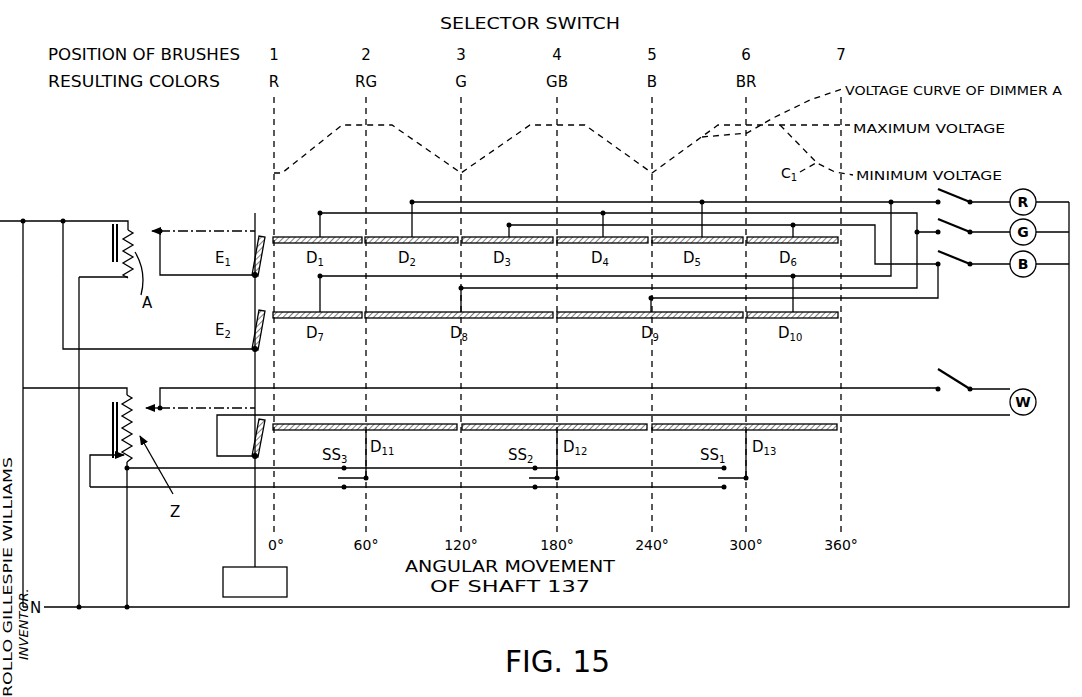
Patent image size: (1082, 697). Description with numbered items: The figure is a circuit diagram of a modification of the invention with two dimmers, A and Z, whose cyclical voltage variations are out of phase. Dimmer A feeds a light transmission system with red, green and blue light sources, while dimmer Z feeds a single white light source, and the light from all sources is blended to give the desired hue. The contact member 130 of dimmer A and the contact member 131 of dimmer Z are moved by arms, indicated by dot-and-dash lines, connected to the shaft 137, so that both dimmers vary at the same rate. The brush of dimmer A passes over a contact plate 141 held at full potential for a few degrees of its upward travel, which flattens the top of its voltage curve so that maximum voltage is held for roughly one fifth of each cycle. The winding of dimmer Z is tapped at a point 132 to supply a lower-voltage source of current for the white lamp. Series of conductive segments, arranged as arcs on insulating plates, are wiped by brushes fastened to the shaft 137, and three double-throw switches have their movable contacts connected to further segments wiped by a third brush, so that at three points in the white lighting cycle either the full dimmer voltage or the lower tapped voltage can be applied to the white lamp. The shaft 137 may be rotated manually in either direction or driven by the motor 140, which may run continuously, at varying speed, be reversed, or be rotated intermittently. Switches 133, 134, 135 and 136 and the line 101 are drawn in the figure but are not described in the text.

The neutral supply line N 101 is at (60, 605).
The contact member 130 is at (146, 228).
The contact member 131 is at (143, 400).
The tap point 132 is at (116, 458).
The switch for red lamp 133 is at (956, 196).
The switch for green lamp 134 is at (956, 226).
The switch for blue lamp 135 is at (956, 258).
The switch for white lamp 136 is at (958, 376).
The shaft 137 is at (253, 506).
The motor 140 is at (287, 586).
The contact plate 141 is at (128, 222).